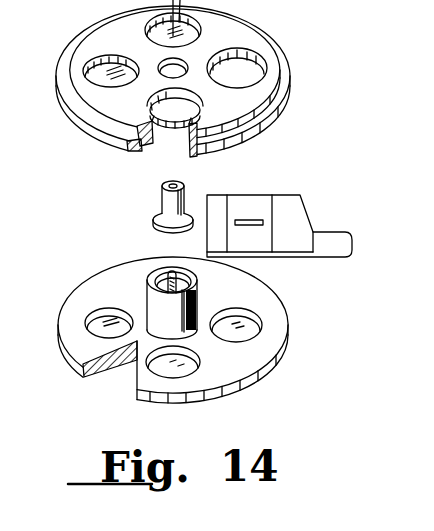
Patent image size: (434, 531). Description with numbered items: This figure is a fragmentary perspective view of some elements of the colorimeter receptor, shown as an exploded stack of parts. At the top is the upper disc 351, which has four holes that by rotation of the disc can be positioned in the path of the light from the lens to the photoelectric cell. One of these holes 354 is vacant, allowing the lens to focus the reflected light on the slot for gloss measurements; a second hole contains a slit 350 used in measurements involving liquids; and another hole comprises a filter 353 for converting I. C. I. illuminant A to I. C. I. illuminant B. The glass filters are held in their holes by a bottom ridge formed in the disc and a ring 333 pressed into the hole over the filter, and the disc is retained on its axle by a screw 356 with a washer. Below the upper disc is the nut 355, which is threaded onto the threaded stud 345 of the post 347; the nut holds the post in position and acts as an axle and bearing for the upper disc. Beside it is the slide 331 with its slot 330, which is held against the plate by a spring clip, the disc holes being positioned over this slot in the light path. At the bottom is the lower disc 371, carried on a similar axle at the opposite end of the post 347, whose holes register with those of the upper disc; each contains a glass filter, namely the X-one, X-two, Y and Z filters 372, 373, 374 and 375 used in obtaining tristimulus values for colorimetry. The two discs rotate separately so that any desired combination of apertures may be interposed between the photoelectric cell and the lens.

The slot 330 is at (243, 221).
The slide 331 is at (279, 217).
The ring 333 is at (248, 62).
The threaded stud 345 is at (152, 283).
The post 347 is at (125, 291).
The slit 350 is at (173, 87).
The disc 351 is at (88, 129).
The filter 353 is at (106, 73).
The hole 354 is at (187, 104).
The nut 355 is at (168, 206).
The screw 356 is at (186, 66).
The disc 371 is at (167, 331).
The glass filter 372 is at (97, 325).
The glass filter 373 is at (165, 370).
The glass filter 374 is at (248, 327).
The glass filter 375 is at (168, 282).